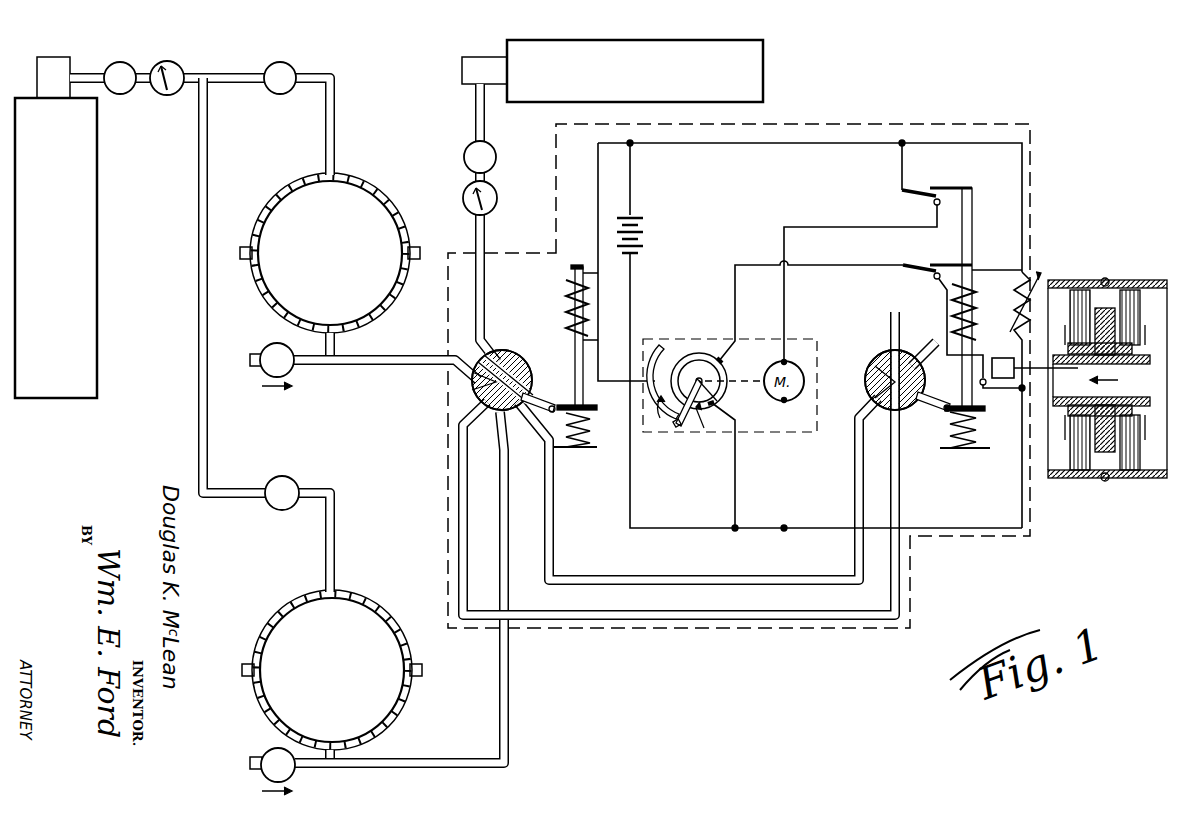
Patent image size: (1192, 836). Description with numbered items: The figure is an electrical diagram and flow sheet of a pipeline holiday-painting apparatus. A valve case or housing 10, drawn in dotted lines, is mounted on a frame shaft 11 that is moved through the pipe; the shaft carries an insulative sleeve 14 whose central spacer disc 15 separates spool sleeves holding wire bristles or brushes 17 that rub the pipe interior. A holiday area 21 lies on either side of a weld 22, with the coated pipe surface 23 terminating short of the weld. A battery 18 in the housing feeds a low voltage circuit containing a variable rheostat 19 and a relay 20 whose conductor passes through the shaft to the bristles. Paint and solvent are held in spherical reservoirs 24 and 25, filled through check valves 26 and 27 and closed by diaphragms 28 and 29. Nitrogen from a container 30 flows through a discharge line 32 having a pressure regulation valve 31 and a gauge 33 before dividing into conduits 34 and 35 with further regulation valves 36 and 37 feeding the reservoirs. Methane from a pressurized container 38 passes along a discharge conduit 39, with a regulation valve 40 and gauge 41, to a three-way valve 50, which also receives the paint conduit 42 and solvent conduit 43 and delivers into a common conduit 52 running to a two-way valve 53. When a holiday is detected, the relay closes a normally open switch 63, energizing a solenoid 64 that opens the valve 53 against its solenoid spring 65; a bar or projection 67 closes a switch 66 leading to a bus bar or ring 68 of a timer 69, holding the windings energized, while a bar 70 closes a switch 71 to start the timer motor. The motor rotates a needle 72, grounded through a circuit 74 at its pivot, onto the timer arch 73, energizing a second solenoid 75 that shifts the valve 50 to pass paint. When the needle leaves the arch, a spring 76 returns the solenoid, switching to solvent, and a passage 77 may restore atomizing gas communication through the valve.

The valve case or housing 10 is at (723, 634).
The frame shaft 11 is at (1150, 344).
The insulative sleeve 14 is at (1070, 418).
The spacer disc 15 is at (1106, 306).
The wire bristles or brushes 17 is at (1080, 454).
The battery 18 is at (644, 234).
The variable rheostat 19 is at (1014, 292).
The relay 20 is at (1007, 348).
The holiday area 21 is at (1096, 476).
The weld 22 is at (1105, 484).
The coated pipe surface 23 is at (1148, 470).
The paint reservoir 24 is at (397, 290).
The solvent reservoir 25 is at (411, 690).
The check valve 26 is at (266, 344).
The check valve 27 is at (268, 750).
The diaphragm 28 is at (322, 187).
The diaphragm 29 is at (342, 602).
The nitrogen bottle or container 30 is at (72, 326).
The pressure regulation valve 31 is at (124, 60).
The discharge line 32 is at (80, 72).
The gauge 33 is at (176, 60).
The conduit 34 is at (246, 72).
The conduit 35 is at (198, 176).
The pressure regulation valve 36 is at (290, 62).
The pressure regulation valve 37 is at (290, 476).
The pressurized bottle or container 38 is at (556, 80).
The discharge conduit 39 is at (474, 108).
The pressure regulation valve 40 is at (490, 162).
The gauge 41 is at (498, 198).
The paint conduit 42 is at (398, 355).
The solvent conduit 43 is at (446, 760).
The three-way valve 50 is at (505, 351).
The common conduit 52 is at (890, 316).
The two-way valve 53 is at (874, 362).
The relay operated switch 63 is at (990, 393).
The solenoid 64 is at (976, 240).
The solenoid spring 65 is at (978, 430).
The normally open switch 66 is at (914, 274).
The bar or projection 67 is at (948, 262).
The bus bar or ring 68 is at (718, 352).
The timer 69 is at (686, 342).
The bar 70 is at (946, 188).
The normally open switch 71 is at (924, 196).
The needle 72 is at (705, 435).
The timer arch or arcuate bus bar 73 is at (660, 346).
The circuit 74 is at (734, 488).
The second solenoid 75 is at (572, 272).
The spring 76 is at (590, 428).
The passage or port 77 is at (524, 370).